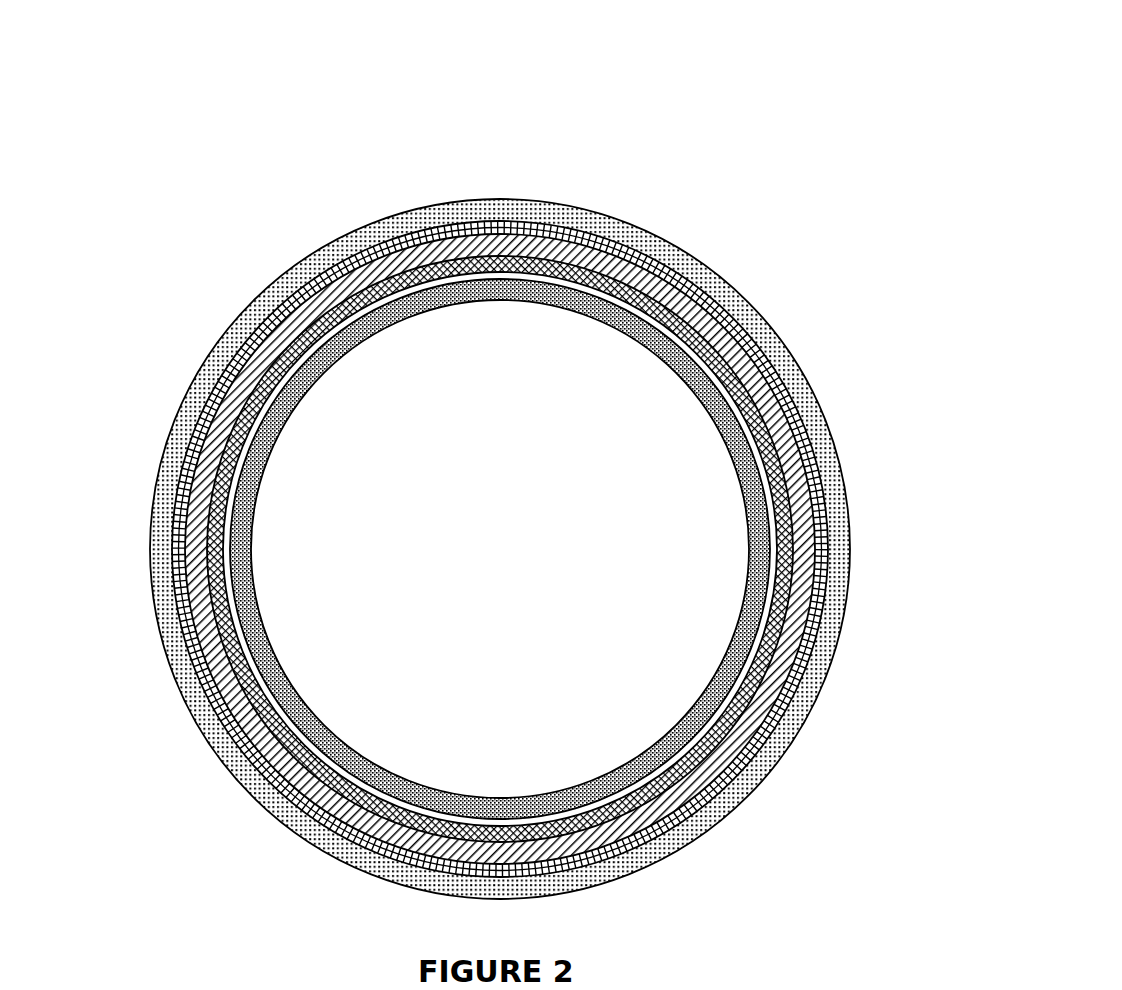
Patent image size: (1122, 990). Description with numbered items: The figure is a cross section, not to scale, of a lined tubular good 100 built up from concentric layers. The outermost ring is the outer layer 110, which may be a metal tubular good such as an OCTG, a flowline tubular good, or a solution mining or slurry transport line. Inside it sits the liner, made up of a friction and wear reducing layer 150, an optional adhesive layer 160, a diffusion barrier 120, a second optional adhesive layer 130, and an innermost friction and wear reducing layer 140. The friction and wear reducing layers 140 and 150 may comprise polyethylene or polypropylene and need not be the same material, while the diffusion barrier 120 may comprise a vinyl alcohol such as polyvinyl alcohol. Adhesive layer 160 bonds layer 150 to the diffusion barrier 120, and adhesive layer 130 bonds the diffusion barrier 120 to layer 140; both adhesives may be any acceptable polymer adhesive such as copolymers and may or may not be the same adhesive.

The lined tubular good 100 is at (298, 247).
The outer layer 110 is at (515, 203).
The friction and wear reducing layer 150 is at (578, 222).
The adhesive layer 160 is at (612, 238).
The diffusion barrier 120 is at (657, 250).
The adhesive layer 130 is at (692, 291).
The friction and wear reducing layer 140 is at (718, 400).